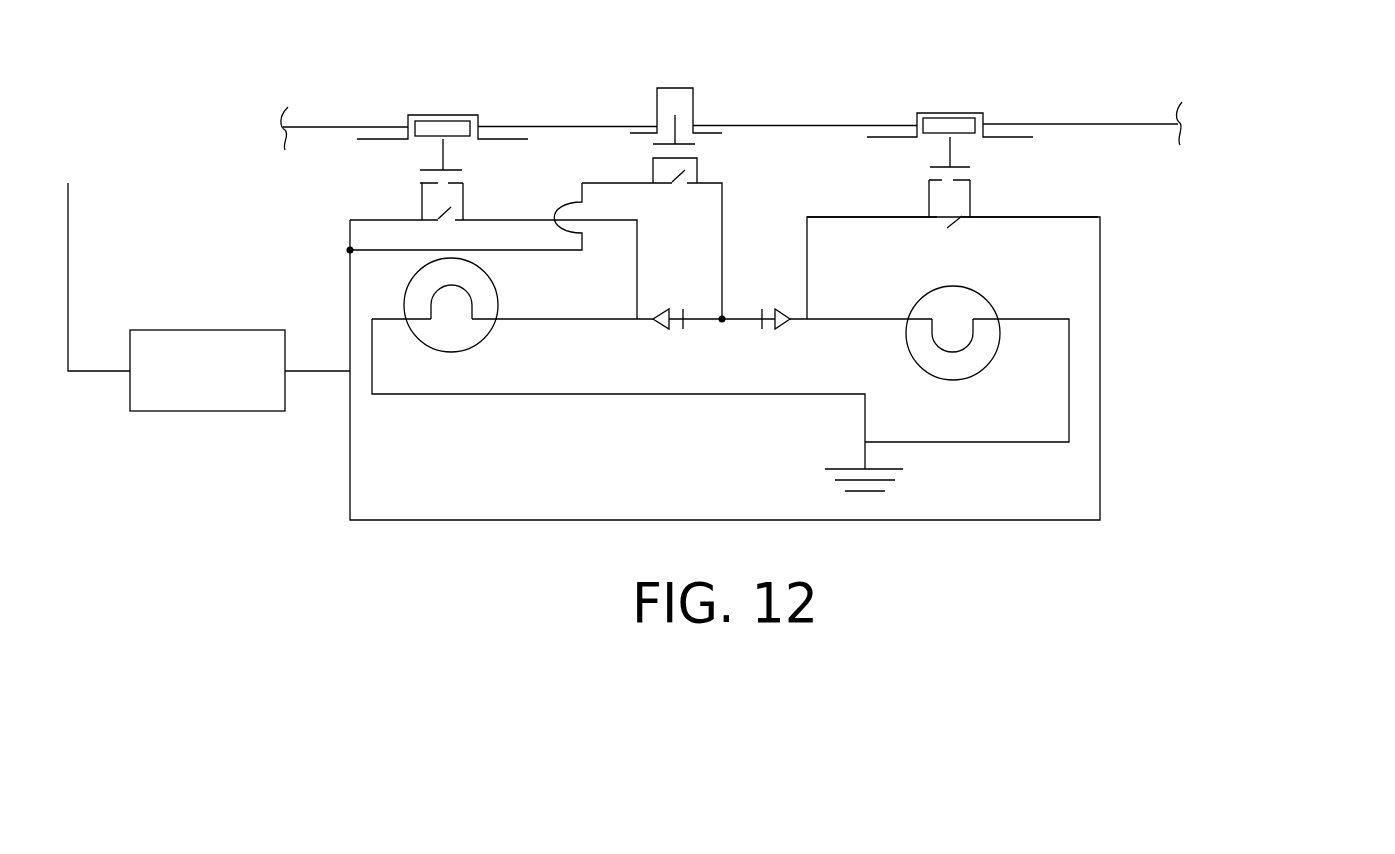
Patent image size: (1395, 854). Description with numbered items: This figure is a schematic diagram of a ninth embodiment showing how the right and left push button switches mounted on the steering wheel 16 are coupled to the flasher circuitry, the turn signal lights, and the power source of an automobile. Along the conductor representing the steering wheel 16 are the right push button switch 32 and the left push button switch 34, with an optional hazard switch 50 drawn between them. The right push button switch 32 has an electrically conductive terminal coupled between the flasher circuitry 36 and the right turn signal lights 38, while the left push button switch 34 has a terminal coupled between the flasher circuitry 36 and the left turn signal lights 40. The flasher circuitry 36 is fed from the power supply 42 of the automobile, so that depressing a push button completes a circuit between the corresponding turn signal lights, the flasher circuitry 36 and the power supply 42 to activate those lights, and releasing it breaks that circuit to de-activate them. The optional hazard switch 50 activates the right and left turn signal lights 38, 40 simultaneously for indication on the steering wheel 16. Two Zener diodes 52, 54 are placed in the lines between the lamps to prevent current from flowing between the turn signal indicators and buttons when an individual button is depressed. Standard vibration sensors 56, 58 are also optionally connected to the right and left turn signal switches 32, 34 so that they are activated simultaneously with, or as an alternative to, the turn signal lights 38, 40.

The steering wheel 16 is at (1118, 122).
The right push button switch 32 is at (975, 123).
The left push button switch 34 is at (481, 129).
The flasher circuitry 36 is at (210, 330).
The right turn signal lights 38 is at (940, 287).
The left turn signal lights 40 is at (483, 335).
The power supply 42 is at (73, 147).
The hazard switch 50 is at (681, 63).
The Zener diode 52 is at (670, 308).
The Zener diode 54 is at (777, 308).
The vibration sensor 56 is at (975, 108).
The vibration sensor 58 is at (467, 111).